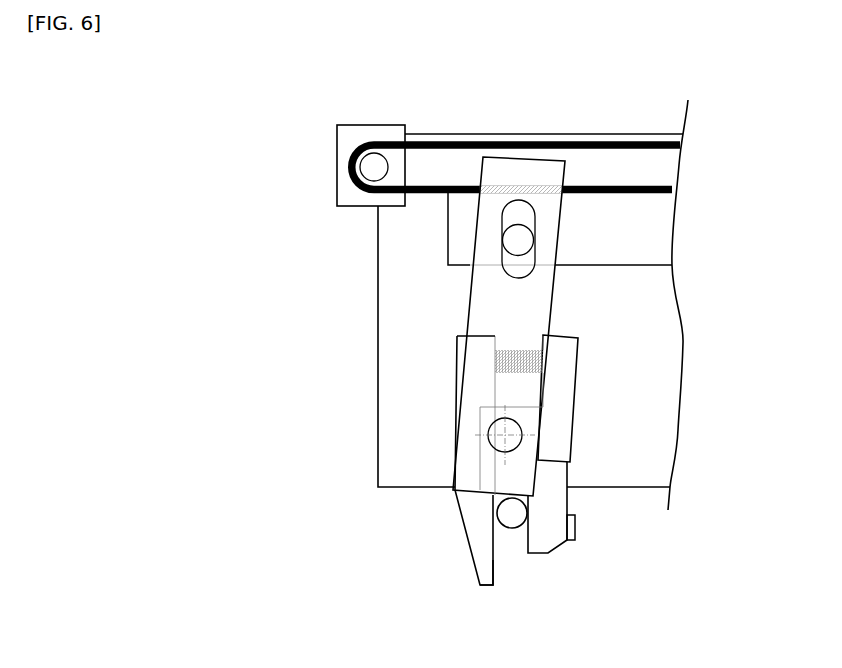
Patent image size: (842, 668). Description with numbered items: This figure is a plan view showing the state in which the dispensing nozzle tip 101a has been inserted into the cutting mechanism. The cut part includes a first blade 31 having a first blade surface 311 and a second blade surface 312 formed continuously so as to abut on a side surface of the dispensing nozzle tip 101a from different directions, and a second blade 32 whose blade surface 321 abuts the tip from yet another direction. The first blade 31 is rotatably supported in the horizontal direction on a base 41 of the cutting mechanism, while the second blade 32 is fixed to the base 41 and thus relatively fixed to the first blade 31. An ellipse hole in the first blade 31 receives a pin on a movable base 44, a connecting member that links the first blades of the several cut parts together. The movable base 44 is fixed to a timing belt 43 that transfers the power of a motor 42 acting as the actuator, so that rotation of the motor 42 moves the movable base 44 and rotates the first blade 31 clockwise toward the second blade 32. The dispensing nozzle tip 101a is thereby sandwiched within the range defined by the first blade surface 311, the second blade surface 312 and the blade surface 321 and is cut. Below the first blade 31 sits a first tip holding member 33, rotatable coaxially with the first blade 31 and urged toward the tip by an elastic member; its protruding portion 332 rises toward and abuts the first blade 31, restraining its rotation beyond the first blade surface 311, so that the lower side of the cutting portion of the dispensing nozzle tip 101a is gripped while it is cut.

The timing belt 43 is at (618, 141).
The motor 42 is at (342, 140).
The movable base 44 is at (658, 232).
The base 41 is at (397, 275).
The first blade 31 is at (540, 297).
The first tip holding member 33 is at (565, 377).
The second blade surface 312 is at (512, 487).
The first blade surface 311 is at (530, 513).
The protruding portion 332 is at (575, 527).
The second blade 32 is at (470, 542).
The blade surface 321 is at (495, 568).
The dispensing nozzle tip 101a is at (512, 528).